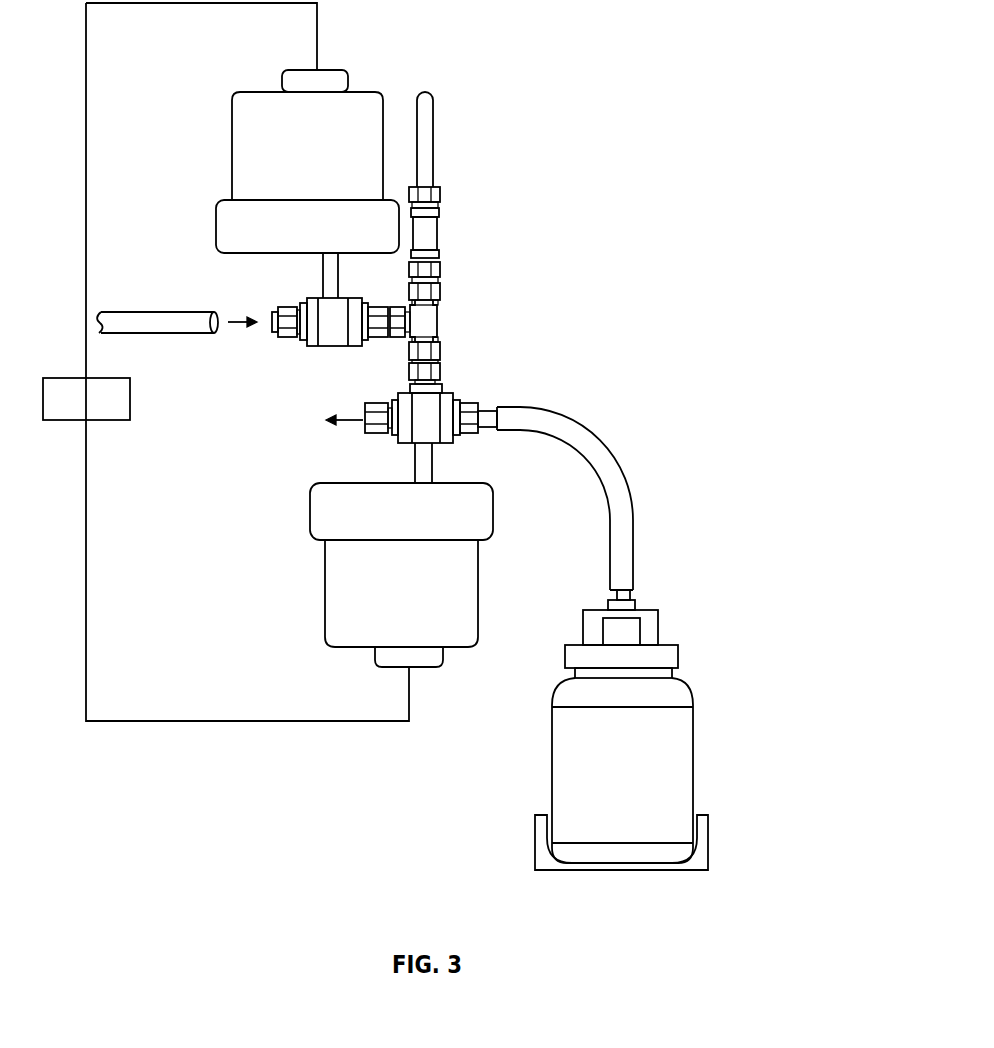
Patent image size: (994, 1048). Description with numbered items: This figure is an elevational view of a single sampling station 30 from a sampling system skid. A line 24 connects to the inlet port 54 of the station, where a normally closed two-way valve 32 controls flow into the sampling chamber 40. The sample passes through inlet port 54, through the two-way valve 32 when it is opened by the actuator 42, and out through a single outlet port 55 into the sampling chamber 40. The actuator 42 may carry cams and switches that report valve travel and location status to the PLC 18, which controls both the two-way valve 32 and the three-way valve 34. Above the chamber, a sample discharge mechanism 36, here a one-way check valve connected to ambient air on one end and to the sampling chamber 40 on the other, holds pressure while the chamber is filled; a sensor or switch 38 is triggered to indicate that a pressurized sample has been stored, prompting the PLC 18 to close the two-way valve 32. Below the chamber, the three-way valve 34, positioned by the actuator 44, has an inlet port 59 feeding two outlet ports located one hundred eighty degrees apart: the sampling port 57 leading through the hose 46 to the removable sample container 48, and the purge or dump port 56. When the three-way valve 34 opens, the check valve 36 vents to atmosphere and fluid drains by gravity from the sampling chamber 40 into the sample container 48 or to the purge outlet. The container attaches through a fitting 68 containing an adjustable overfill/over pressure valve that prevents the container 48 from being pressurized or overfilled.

The PLC 18 is at (75, 378).
The line 24 is at (170, 312).
The sampling station 30 is at (577, 64).
The two-way valve 32 is at (275, 270).
The three-way valve 34 is at (451, 389).
The sample discharge mechanism 36 is at (443, 193).
The sensor or switch 38 is at (440, 210).
The sampling chamber 40 is at (437, 322).
The actuator 42 is at (232, 96).
The actuator 44 is at (325, 605).
The hose 46 is at (585, 428).
The sample container 48 is at (693, 766).
The inlet port 54 is at (276, 308).
The outlet port 55 is at (388, 306).
The dump port 56 is at (370, 405).
The sampling port 57 is at (474, 436).
The inlet port 59 is at (409, 368).
The fitting 68 is at (637, 600).